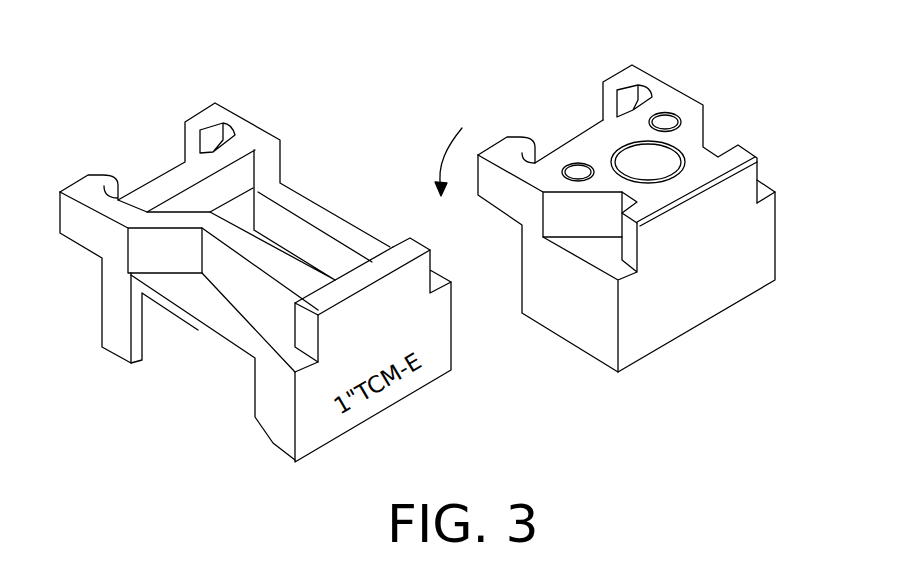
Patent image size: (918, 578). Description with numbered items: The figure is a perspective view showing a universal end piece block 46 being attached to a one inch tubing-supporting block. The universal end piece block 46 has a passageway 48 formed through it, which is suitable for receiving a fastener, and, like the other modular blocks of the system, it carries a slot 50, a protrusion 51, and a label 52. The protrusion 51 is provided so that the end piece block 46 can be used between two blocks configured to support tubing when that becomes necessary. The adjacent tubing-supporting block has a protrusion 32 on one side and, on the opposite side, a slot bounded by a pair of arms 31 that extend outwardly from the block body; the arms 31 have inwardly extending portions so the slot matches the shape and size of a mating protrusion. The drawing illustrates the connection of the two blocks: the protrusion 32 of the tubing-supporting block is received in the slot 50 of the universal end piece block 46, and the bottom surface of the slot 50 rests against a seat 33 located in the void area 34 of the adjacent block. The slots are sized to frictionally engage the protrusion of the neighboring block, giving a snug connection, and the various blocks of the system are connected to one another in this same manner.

The arms 31 is at (215, 100).
The protrusion 32 is at (407, 243).
The seat 33 is at (185, 312).
The void area 34 is at (255, 323).
The universal end piece block 46 is at (667, 82).
The passageway 48 is at (672, 117).
The slot 50 is at (568, 147).
The protrusion 51 is at (737, 155).
The label 52 is at (723, 298).